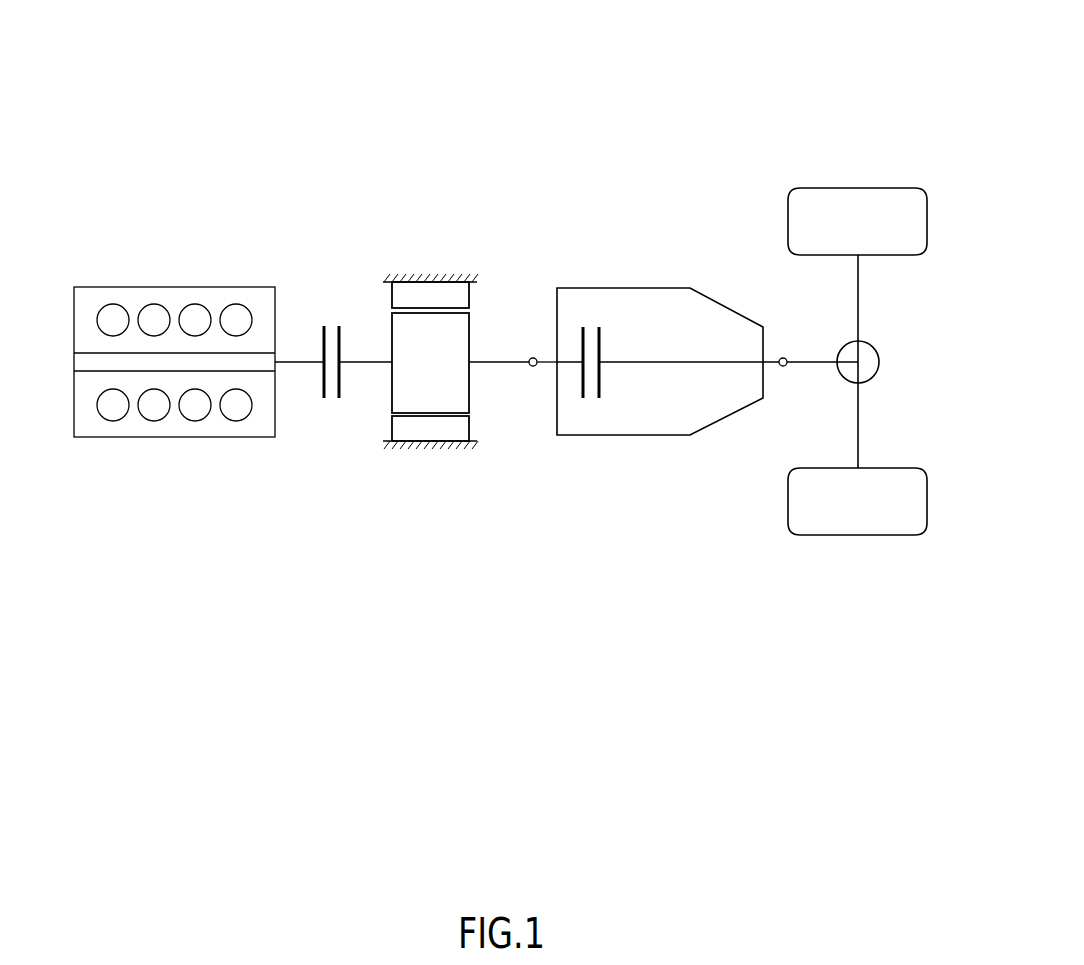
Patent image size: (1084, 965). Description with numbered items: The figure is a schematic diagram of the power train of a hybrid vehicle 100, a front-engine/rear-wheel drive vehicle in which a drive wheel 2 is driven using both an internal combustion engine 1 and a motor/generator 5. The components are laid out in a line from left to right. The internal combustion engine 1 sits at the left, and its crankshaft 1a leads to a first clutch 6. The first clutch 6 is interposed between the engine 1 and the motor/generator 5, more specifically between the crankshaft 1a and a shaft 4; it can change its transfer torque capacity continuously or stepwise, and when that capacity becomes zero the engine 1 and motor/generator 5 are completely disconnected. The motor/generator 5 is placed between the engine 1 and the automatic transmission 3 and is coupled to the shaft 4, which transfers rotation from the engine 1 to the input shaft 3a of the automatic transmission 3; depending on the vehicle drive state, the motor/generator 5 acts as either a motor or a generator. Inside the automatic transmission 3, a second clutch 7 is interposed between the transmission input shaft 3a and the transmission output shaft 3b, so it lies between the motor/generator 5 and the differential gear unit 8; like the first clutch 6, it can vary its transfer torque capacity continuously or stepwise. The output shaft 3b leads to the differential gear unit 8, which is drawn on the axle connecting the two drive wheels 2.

The hybrid vehicle 100 is at (870, 88).
The internal combustion engine 1 is at (140, 283).
The crankshaft 1a is at (297, 360).
The first clutch 6 is at (332, 317).
The motor/generator 5 is at (422, 272).
The shaft 4 is at (493, 360).
The input shaft of the automatic transmission 3a is at (543, 360).
The automatic transmission 3 is at (643, 285).
The second clutch 7 is at (590, 320).
The output shaft of the automatic transmission 3b is at (770, 356).
The differential gear unit 8 is at (879, 362).
The drive wheel 2 is at (793, 190).